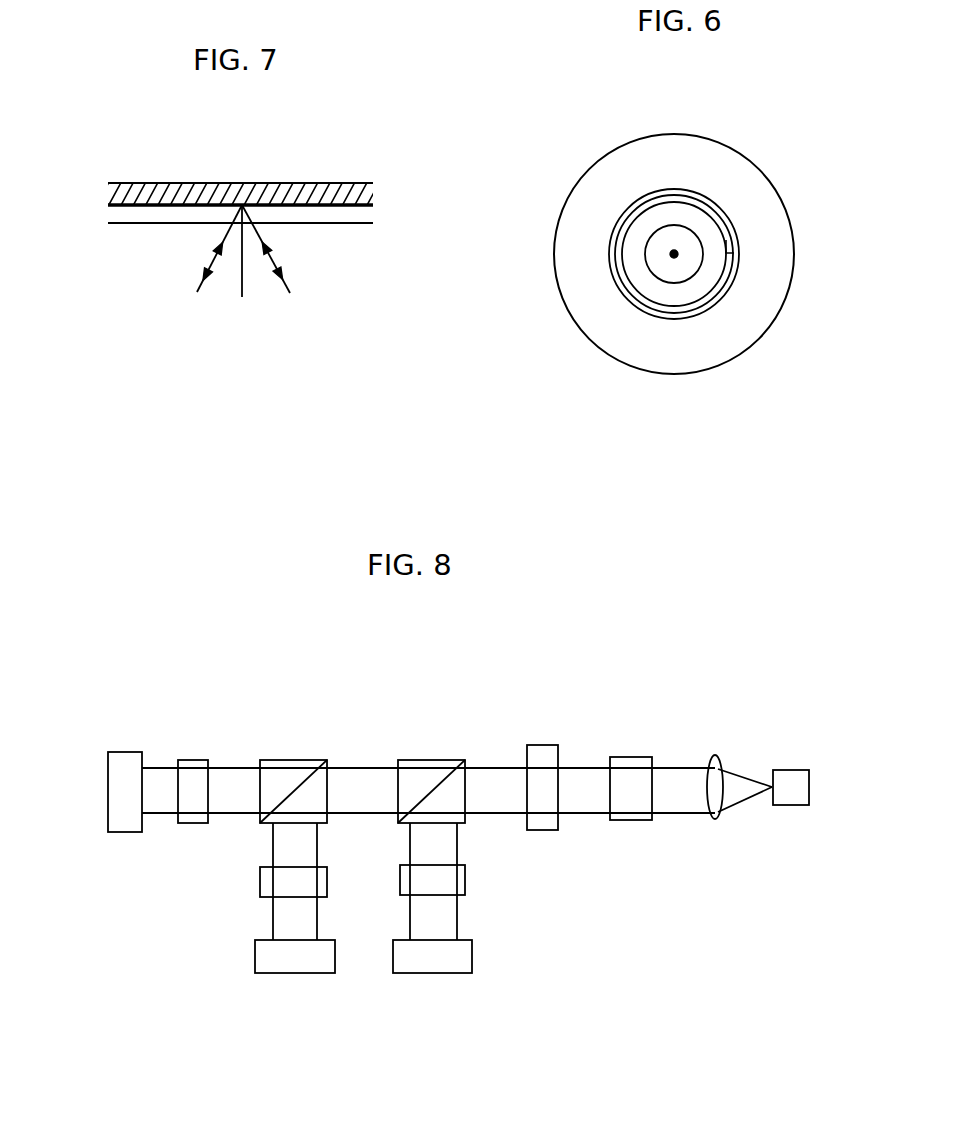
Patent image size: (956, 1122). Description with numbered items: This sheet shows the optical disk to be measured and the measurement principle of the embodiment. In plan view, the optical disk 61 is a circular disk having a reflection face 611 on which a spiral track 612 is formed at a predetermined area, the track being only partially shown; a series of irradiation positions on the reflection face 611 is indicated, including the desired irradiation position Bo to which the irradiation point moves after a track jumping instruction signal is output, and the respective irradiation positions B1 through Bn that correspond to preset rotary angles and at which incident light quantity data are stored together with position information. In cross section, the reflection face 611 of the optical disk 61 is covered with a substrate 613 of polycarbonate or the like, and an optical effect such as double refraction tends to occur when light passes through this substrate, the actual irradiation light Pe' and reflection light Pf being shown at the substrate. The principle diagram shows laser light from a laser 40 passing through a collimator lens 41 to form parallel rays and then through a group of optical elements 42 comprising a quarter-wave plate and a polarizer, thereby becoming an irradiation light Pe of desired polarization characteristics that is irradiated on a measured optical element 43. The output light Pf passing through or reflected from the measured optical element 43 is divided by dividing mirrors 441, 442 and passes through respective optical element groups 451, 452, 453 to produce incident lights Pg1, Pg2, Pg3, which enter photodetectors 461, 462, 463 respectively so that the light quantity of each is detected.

In FIG. 7, the optical disk 61 is at (256, 143).
In FIG. 6, the optical disk 61 is at (684, 100).
In FIG. 7, the reflection face 611 is at (135, 247).
In FIG. 6, the reflection face 611 is at (565, 235).
In FIG. 6, the spiral track 612 is at (617, 288).
In FIG. 7, the substrate 613 is at (338, 224).
In FIG. 6, the irradiation position B1 is at (728, 245).
In FIG. 6, the irradiation position Bo is at (734, 253).
In FIG. 6, the irradiation position Bn is at (743, 258).
In FIG. 8, the irradiation light Pe is at (582, 772).
In FIG. 7, the output light Pf is at (269, 261).
In FIG. 8, the output light Pf is at (495, 775).
In FIG. 8, the incident light Pg1 is at (453, 881).
In FIG. 8, the incident light Pg2 is at (316, 881).
In FIG. 8, the incident light Pg3 is at (160, 773).
In FIG. 8, the laser 40 is at (787, 807).
In FIG. 8, the collimator lens 41 is at (717, 820).
In FIG. 8, the group of optical elements 42 is at (638, 822).
In FIG. 8, the measured optical element 43 is at (543, 833).
In FIG. 8, the dividing mirror 441 is at (430, 760).
In FIG. 8, the dividing mirror 442 is at (290, 763).
In FIG. 8, the optical element group 451 is at (552, 945).
In FIG. 8, the optical element group 452 is at (168, 962).
In FIG. 8, the optical element group 453 is at (195, 825).
In FIG. 8, the photodetector 461 is at (438, 965).
In FIG. 8, the photodetector 462 is at (298, 963).
In FIG. 8, the photodetector 463 is at (125, 833).